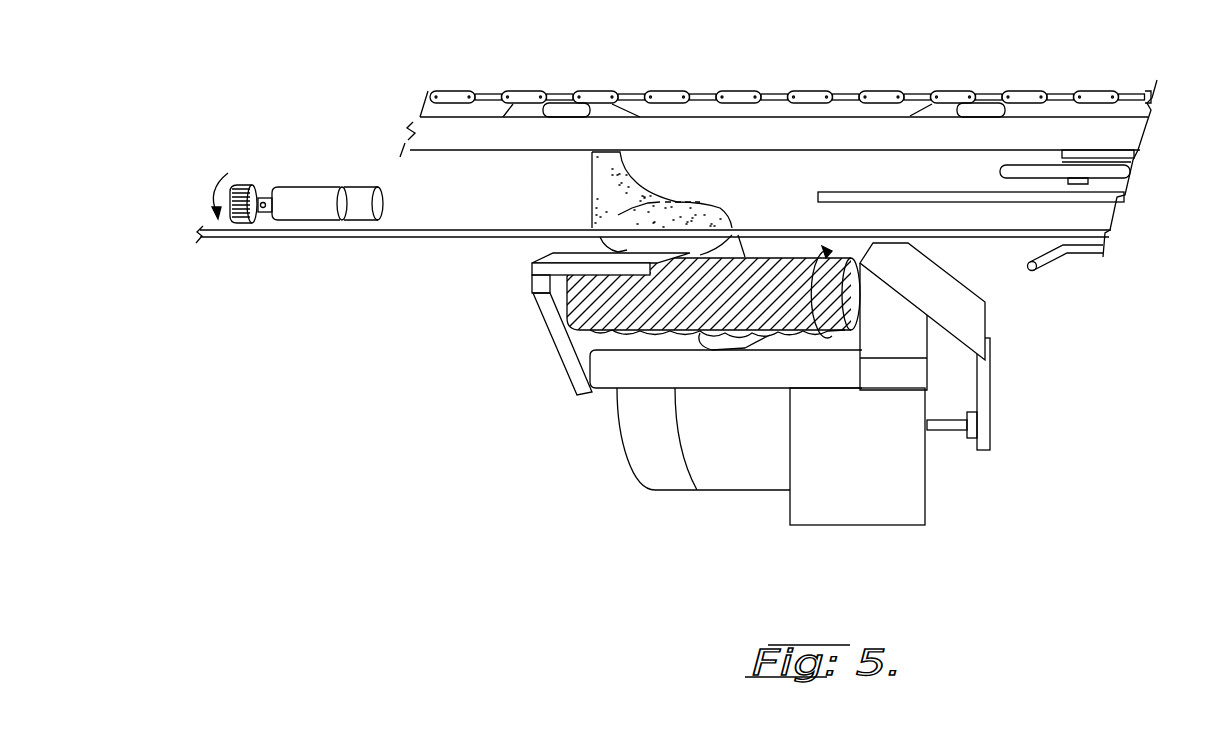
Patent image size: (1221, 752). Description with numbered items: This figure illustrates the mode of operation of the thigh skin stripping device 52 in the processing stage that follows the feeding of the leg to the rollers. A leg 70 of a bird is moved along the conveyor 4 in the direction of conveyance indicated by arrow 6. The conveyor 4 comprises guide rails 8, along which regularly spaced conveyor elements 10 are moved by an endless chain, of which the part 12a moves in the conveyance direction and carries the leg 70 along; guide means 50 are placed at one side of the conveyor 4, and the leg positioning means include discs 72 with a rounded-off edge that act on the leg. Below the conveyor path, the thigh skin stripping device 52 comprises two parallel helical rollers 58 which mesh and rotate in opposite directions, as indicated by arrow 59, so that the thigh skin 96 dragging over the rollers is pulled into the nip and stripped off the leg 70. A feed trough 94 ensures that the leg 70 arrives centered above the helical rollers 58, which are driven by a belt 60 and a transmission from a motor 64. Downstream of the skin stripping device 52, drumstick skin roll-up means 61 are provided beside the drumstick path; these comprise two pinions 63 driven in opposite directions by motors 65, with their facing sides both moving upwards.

The conveyor 4 is at (820, 63).
The arrow indicating direction of conveyance 6 is at (603, 63).
The guide rails 8 is at (740, 135).
The conveyor elements 10 is at (550, 105).
The part of the chain moving in the conveyance direction 12a is at (935, 92).
The guide means 50 is at (1110, 250).
The thigh skin stripping device 52 is at (603, 500).
The helical rollers 58 is at (618, 310).
The arrow indicating roller rotation 59 is at (812, 250).
The belt 60 is at (983, 407).
The drumstick skin roll-up means 61 is at (315, 128).
The pinions 63 is at (268, 185).
The motor 64 is at (748, 473).
The motors 65 is at (360, 210).
The leg 70 is at (607, 175).
The discs 72 is at (1000, 173).
The feed trough 94 is at (973, 322).
The thigh skin 96 is at (717, 345).